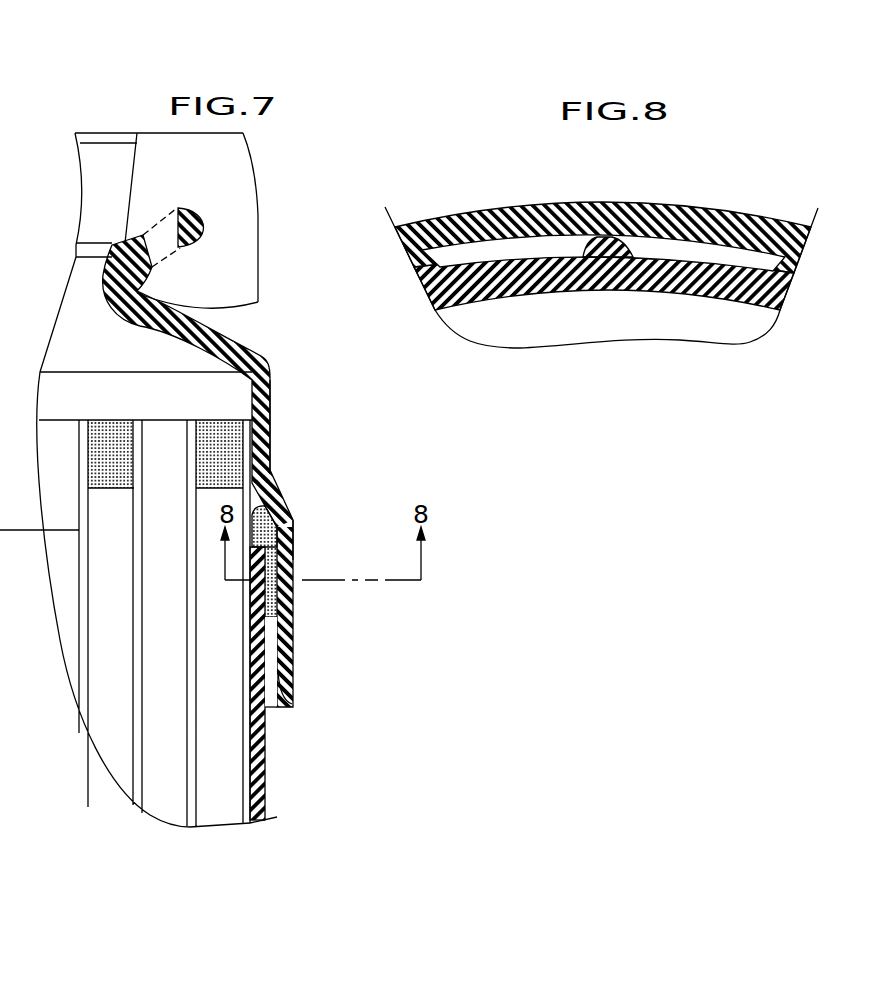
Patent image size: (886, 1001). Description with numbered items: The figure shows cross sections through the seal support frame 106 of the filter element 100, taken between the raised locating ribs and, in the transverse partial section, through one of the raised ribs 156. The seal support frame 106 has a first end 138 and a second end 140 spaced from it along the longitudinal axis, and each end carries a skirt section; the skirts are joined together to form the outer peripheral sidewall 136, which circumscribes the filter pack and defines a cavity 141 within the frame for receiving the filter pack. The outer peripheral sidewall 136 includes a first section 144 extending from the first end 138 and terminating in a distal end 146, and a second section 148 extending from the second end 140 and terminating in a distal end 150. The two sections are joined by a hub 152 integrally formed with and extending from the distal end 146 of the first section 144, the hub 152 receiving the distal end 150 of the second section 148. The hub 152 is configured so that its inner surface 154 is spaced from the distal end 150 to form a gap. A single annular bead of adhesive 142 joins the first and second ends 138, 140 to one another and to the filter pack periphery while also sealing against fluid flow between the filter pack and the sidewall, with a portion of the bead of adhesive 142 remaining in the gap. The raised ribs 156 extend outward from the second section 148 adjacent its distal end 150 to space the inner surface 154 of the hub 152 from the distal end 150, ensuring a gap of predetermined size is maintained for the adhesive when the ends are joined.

In FIG. 7, the filter element 100 is at (275, 840).
In FIG. 8, the filter element 100 is at (762, 197).
In FIG. 7, the seal support frame 106 is at (267, 364).
In FIG. 7, the outer peripheral sidewall 136 is at (266, 697).
In FIG. 7, the first end 138 is at (271, 392).
In FIG. 7, the second end 140 is at (266, 807).
In FIG. 7, the cavity 141 is at (228, 728).
In FIG. 7, the bead of adhesive 142 is at (291, 518).
In FIG. 7, the first section 144 is at (270, 447).
In FIG. 7, the distal end of the first section 146 is at (272, 487).
In FIG. 7, the second section 148 is at (266, 780).
In FIG. 8, the second section 148 is at (668, 290).
In FIG. 7, the distal end of the second section 150 is at (292, 538).
In FIG. 7, the hub 152 is at (294, 617).
In FIG. 8, the hub 152 is at (667, 202).
In FIG. 7, the inner surface of the hub 154 is at (233, 671).
In FIG. 8, the inner surface of the hub 154 is at (477, 243).
In FIG. 8, the raised ribs 156 is at (615, 233).